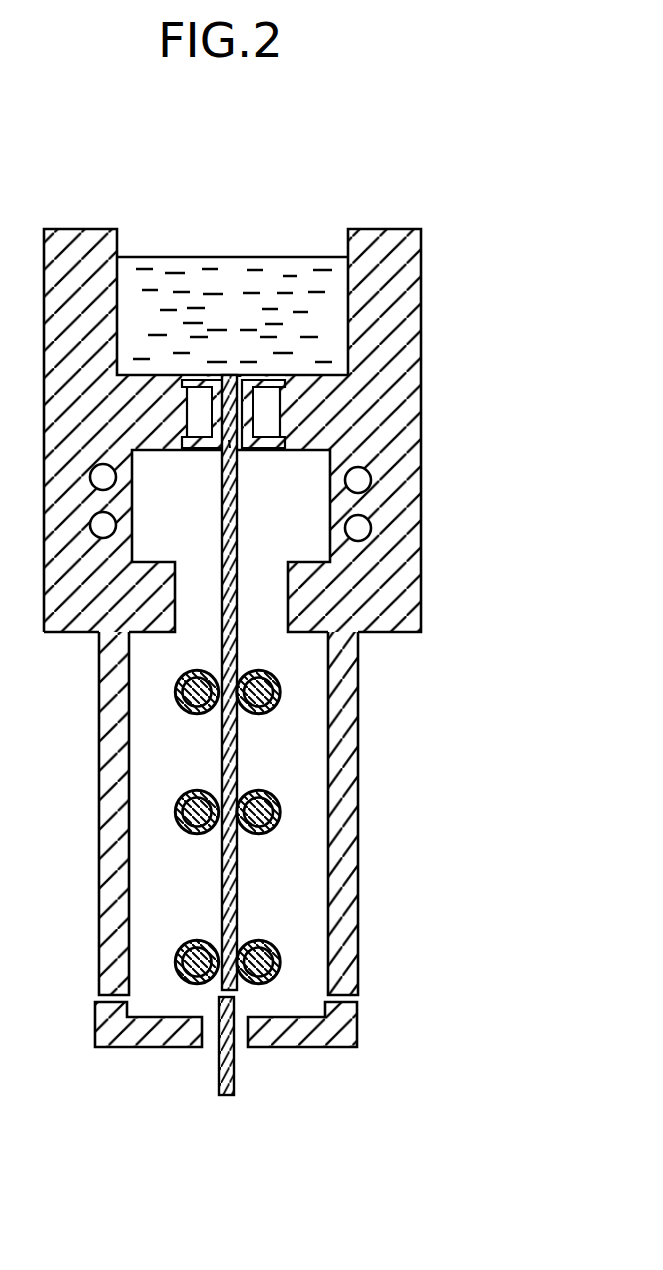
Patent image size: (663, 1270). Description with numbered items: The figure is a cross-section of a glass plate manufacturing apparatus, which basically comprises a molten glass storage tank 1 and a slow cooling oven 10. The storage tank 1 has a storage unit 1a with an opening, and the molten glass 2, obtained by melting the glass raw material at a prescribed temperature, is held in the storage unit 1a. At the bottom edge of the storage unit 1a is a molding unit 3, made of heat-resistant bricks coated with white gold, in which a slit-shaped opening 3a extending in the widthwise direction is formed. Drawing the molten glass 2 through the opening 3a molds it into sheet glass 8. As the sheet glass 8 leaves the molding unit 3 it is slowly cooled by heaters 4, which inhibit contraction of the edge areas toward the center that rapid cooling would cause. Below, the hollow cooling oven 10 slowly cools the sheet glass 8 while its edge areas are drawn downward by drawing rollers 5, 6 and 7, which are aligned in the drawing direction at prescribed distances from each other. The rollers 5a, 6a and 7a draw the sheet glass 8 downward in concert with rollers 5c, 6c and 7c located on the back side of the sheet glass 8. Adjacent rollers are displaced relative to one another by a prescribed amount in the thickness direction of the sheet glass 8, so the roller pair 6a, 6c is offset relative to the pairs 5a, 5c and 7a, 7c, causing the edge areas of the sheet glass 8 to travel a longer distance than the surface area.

The molten glass storage tank 1 is at (384, 305).
The storage unit 1a is at (118, 243).
The molten glass 2 is at (287, 276).
The molding unit 3 is at (284, 416).
The slit-shaped opening 3a is at (230, 448).
The heaters 4 is at (372, 472).
The drawing roller 5 is at (302, 728).
The drawing roller 5a is at (184, 714).
The drawing roller 5c is at (257, 717).
The drawing roller 6 is at (294, 818).
The drawing roller 6a is at (183, 833).
The drawing roller 6c is at (280, 829).
The drawing roller 7 is at (305, 943).
The drawing roller 7a is at (182, 938).
The drawing roller 7c is at (273, 938).
The sheet glass 8 is at (240, 584).
The cooling oven 10 is at (356, 824).